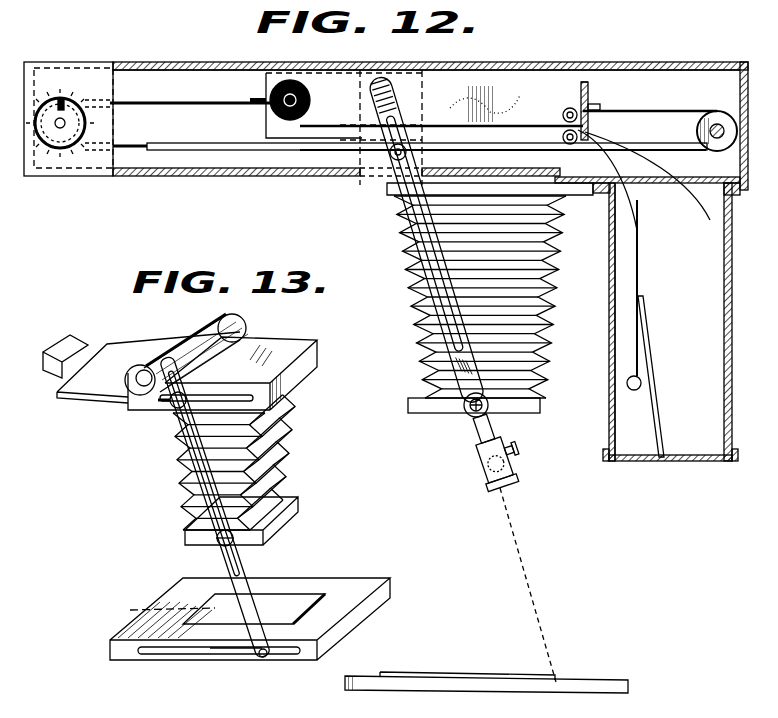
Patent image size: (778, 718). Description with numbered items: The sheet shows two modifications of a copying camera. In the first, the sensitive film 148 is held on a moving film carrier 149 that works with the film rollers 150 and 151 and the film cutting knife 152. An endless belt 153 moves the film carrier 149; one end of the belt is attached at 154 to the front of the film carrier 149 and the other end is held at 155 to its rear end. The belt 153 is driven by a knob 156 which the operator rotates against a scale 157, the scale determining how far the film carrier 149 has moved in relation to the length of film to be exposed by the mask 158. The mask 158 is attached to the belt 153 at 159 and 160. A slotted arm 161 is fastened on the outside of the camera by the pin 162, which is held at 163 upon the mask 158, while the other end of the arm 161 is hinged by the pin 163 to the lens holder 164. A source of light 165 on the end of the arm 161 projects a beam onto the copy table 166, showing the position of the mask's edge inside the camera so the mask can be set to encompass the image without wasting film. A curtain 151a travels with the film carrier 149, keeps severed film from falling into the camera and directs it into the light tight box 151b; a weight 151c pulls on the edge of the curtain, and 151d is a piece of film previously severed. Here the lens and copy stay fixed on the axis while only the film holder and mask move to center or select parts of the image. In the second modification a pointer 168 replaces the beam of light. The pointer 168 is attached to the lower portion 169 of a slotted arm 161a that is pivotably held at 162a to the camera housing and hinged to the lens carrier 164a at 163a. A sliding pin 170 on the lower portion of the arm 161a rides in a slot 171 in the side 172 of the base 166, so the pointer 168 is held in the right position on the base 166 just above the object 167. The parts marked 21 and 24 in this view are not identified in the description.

In FIG. 13, the slab 21 is at (141, 367).
In FIG. 13, the roller 24 is at (200, 332).
In FIG. 12, the sensitive film 148 is at (306, 92).
In FIG. 12, the film carrier 149 is at (568, 108).
In FIG. 12, the film roller 150 is at (575, 108).
In FIG. 12, the film roller 151 is at (600, 128).
In FIG. 12, the curtain 151a is at (640, 272).
In FIG. 12, the light tight box 151b is at (610, 334).
In FIG. 12, the weight 151c is at (627, 386).
In FIG. 12, the piece of severed film 151d is at (657, 427).
In FIG. 12, the film cutting knife 152 is at (596, 95).
In FIG. 12, the endless belt 153 is at (215, 56).
In FIG. 12, the belt attachment point 154 is at (262, 97).
In FIG. 12, the belt attachment point 155 is at (600, 108).
In FIG. 12, the knob 156 is at (64, 99).
In FIG. 12, the scale 157 is at (66, 100).
In FIG. 12, the mask 158 is at (203, 151).
In FIG. 12, the mask attachment point 159 is at (145, 143).
In FIG. 12, the mask attachment point 160 is at (430, 160).
In FIG. 12, the slotted arm 161 is at (408, 212).
In FIG. 13, the slotted arm 161a is at (246, 560).
In FIG. 12, the pin 162 is at (405, 140).
In FIG. 13, the pivot 162a is at (172, 406).
In FIG. 12, the pin 163 is at (466, 413).
In FIG. 13, the hinge attachment 163a is at (217, 542).
In FIG. 12, the lens holder 164 is at (408, 406).
In FIG. 13, the lens carrier 164a is at (298, 504).
In FIG. 12, the source of light 165 is at (486, 466).
In FIG. 12, the copy table 166 is at (600, 680).
In FIG. 13, the copy table 166 is at (150, 622).
In FIG. 12, the object 167 is at (445, 676).
In FIG. 13, the object 167 is at (215, 608).
In FIG. 13, the pointer 168 is at (310, 630).
In FIG. 13, the lower portion of slotted arm 169 is at (250, 650).
In FIG. 13, the sliding pin 170 is at (263, 658).
In FIG. 13, the slot 171 is at (165, 656).
In FIG. 13, the side of base 172 is at (118, 650).